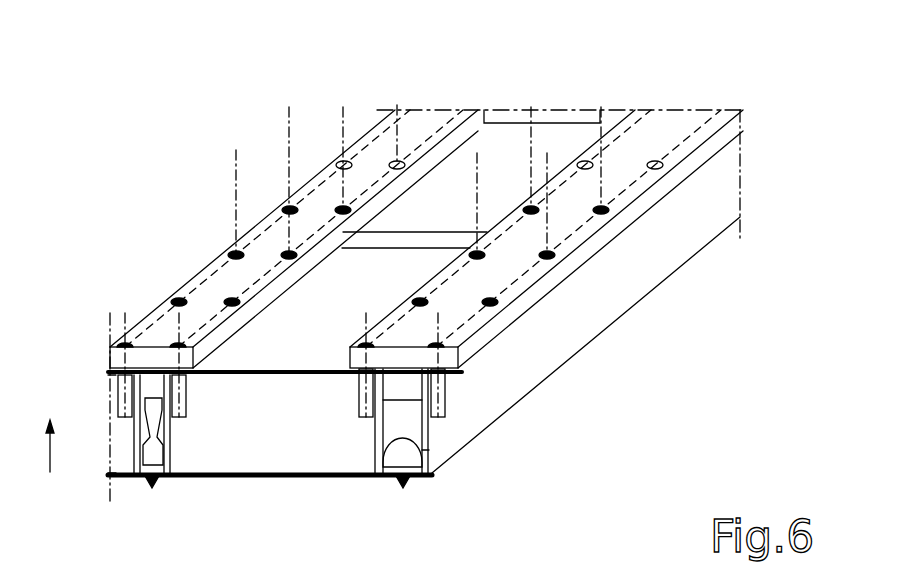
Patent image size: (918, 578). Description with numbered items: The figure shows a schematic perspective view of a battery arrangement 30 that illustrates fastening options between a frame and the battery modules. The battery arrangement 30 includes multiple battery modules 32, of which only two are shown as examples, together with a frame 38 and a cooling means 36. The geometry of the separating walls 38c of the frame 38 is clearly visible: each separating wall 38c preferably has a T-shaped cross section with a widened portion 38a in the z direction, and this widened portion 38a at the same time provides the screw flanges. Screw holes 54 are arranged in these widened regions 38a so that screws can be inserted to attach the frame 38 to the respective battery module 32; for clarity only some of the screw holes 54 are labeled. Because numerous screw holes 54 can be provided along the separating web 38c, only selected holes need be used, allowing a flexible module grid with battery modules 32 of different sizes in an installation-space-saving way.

The battery arrangement 30 is at (215, 118).
The battery module 32 is at (553, 143).
The cooling means 36 is at (437, 480).
The frame 38 is at (273, 195).
The separating wall 38c is at (642, 115).
The widened portion 38a is at (398, 115).
The screw hole 54 is at (282, 208).